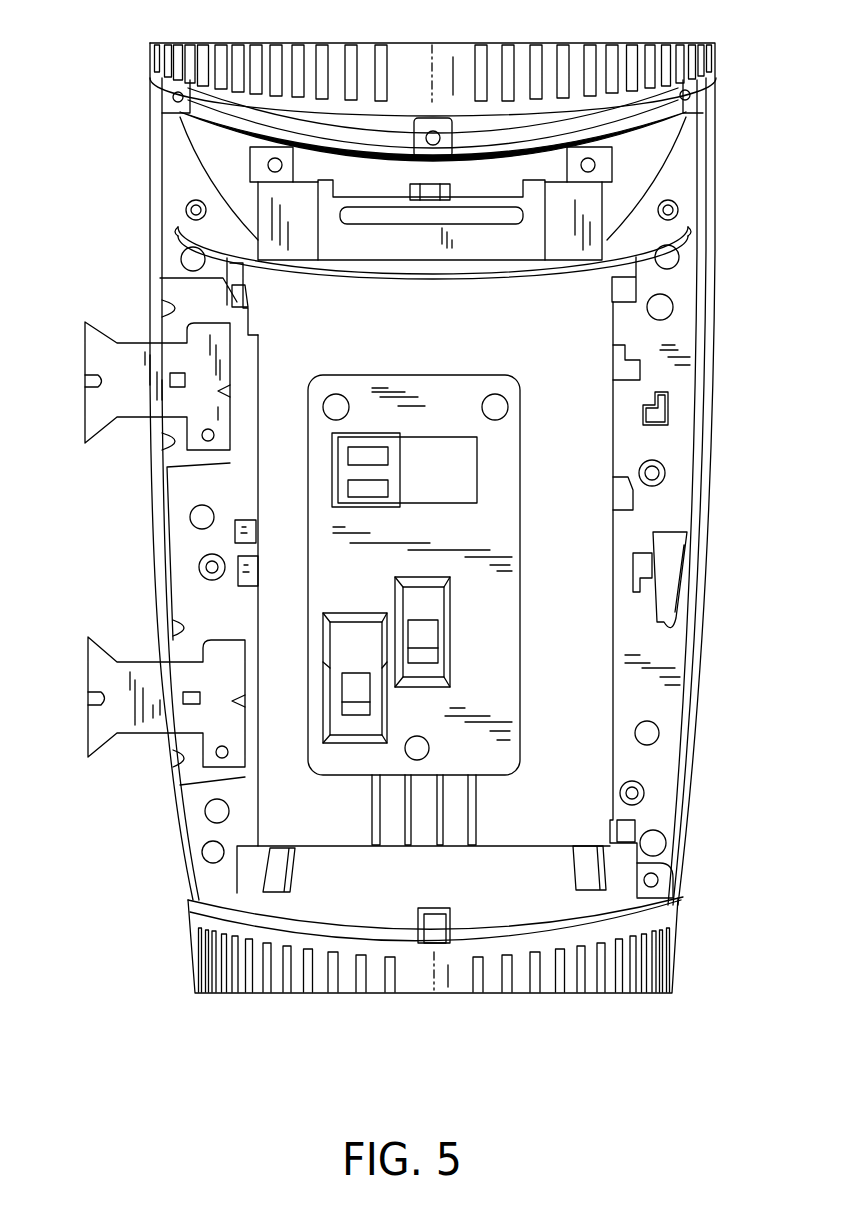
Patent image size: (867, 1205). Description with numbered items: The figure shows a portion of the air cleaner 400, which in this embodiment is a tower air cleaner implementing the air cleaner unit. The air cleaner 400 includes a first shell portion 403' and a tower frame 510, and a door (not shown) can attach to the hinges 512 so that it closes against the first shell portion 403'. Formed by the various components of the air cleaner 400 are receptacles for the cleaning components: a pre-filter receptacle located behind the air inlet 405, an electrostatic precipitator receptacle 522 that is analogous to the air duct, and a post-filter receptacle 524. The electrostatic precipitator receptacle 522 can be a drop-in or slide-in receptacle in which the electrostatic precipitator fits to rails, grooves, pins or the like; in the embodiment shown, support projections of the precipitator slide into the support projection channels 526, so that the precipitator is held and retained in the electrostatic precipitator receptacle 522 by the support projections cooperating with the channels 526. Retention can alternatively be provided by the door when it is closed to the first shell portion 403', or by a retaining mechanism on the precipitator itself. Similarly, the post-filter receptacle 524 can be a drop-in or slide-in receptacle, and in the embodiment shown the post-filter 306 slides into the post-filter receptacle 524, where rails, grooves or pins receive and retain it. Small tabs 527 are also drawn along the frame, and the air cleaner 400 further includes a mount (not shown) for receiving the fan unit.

The air cleaner 400 is at (163, 1017).
The air inlet 405 is at (688, 922).
The first shell portion 403' is at (484, 900).
The post-filter 306 is at (515, 198).
The post-filter receptacle 524 is at (558, 200).
The support projection channels 526 is at (228, 280).
The hinges 512 is at (86, 383).
The electrostatic precipitator receptacle 522 is at (275, 445).
The tower frame 510 is at (677, 701).
The snap tab 527 is at (233, 558).